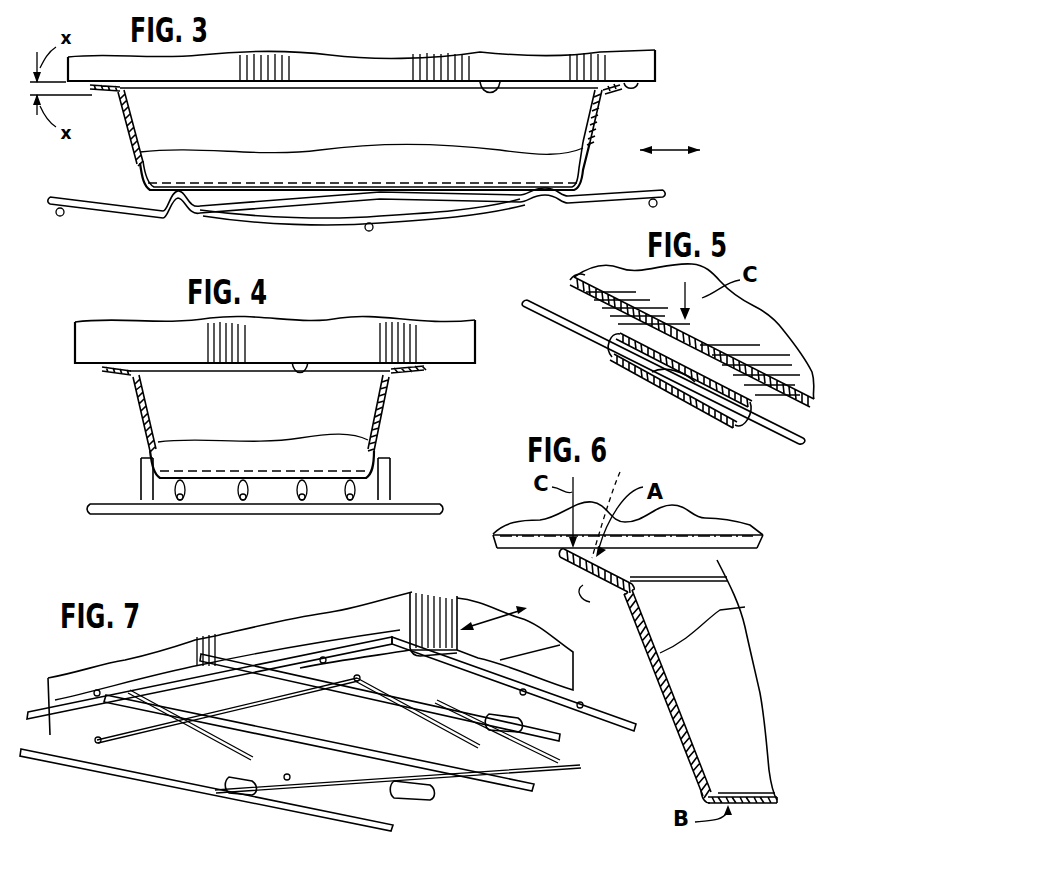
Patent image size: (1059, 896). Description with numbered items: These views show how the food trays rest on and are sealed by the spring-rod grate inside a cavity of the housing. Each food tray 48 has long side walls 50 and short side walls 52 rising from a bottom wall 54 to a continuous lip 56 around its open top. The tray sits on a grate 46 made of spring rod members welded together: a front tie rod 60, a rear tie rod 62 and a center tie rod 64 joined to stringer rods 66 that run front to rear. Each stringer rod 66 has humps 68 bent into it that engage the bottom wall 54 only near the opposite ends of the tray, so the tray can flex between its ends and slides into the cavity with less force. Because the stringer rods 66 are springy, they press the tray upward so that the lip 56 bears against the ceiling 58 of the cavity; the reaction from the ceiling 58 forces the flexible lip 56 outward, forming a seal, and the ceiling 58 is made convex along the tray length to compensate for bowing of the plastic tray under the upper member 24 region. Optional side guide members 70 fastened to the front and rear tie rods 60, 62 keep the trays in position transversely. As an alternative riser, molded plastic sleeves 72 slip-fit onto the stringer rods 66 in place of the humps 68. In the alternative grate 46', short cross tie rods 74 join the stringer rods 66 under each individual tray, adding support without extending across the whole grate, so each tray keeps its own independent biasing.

In FIG. 3, the shelf 24 is at (612, 58).
In FIG. 4, the shelf 24 is at (360, 327).
In FIG. 3, the grate 46 is at (695, 166).
In FIG. 7, the grate 46' is at (96, 799).
In FIG. 3, the food tray 48 is at (290, 110).
In FIG. 4, the food tray 48 is at (192, 373).
In FIG. 5, the food tray 48 is at (746, 304).
In FIG. 6, the food tray 48 is at (683, 749).
In FIG. 7, the food tray 48 is at (390, 594).
In FIG. 3, the long side wall 50 is at (333, 134).
In FIG. 4, the long side wall 50 is at (148, 414).
In FIG. 6, the long side wall 50 is at (728, 625).
In FIG. 7, the long side wall 50 is at (240, 640).
In FIG. 3, the short side wall 52 is at (140, 130).
In FIG. 4, the short side wall 52 is at (253, 424).
In FIG. 6, the short side wall 52 is at (742, 663).
In FIG. 7, the short side wall 52 is at (460, 615).
In FIG. 3, the bottom wall 54 is at (337, 192).
In FIG. 5, the bottom wall 54 is at (765, 327).
In FIG. 6, the bottom wall 54 is at (762, 808).
In FIG. 7, the bottom wall 54 is at (505, 660).
In FIG. 3, the continuous lip 56 is at (636, 88).
In FIG. 4, the continuous lip 56 is at (118, 374).
In FIG. 6, the continuous lip 56 is at (609, 510).
In FIG. 3, the ceiling 58 is at (108, 92).
In FIG. 4, the ceiling 58 is at (300, 365).
In FIG. 6, the ceiling 58 is at (547, 556).
In FIG. 3, the front tie rod 60 is at (665, 200).
In FIG. 7, the front tie rod 60 is at (592, 717).
In FIG. 3, the rear tie rod 62 is at (63, 214).
In FIG. 4, the rear tie rod 62 is at (128, 516).
In FIG. 7, the rear tie rod 62 is at (280, 807).
In FIG. 3, the center tie rod 64 is at (375, 230).
In FIG. 7, the center tie rod 64 is at (490, 790).
In FIG. 3, the stringer rod 66 is at (495, 222).
In FIG. 4, the stringer rod 66 is at (243, 500).
In FIG. 5, the stringer rod 66 is at (795, 442).
In FIG. 7, the stringer rod 66 is at (383, 733).
In FIG. 3, the hump 68 is at (182, 207).
In FIG. 4, the hump 68 is at (184, 500).
In FIG. 7, the hump 68 is at (325, 660).
In FIG. 4, the side guide member 70 is at (141, 483).
In FIG. 5, the sleeve 72 is at (672, 427).
In FIG. 7, the cross tie rod 74 is at (440, 733).